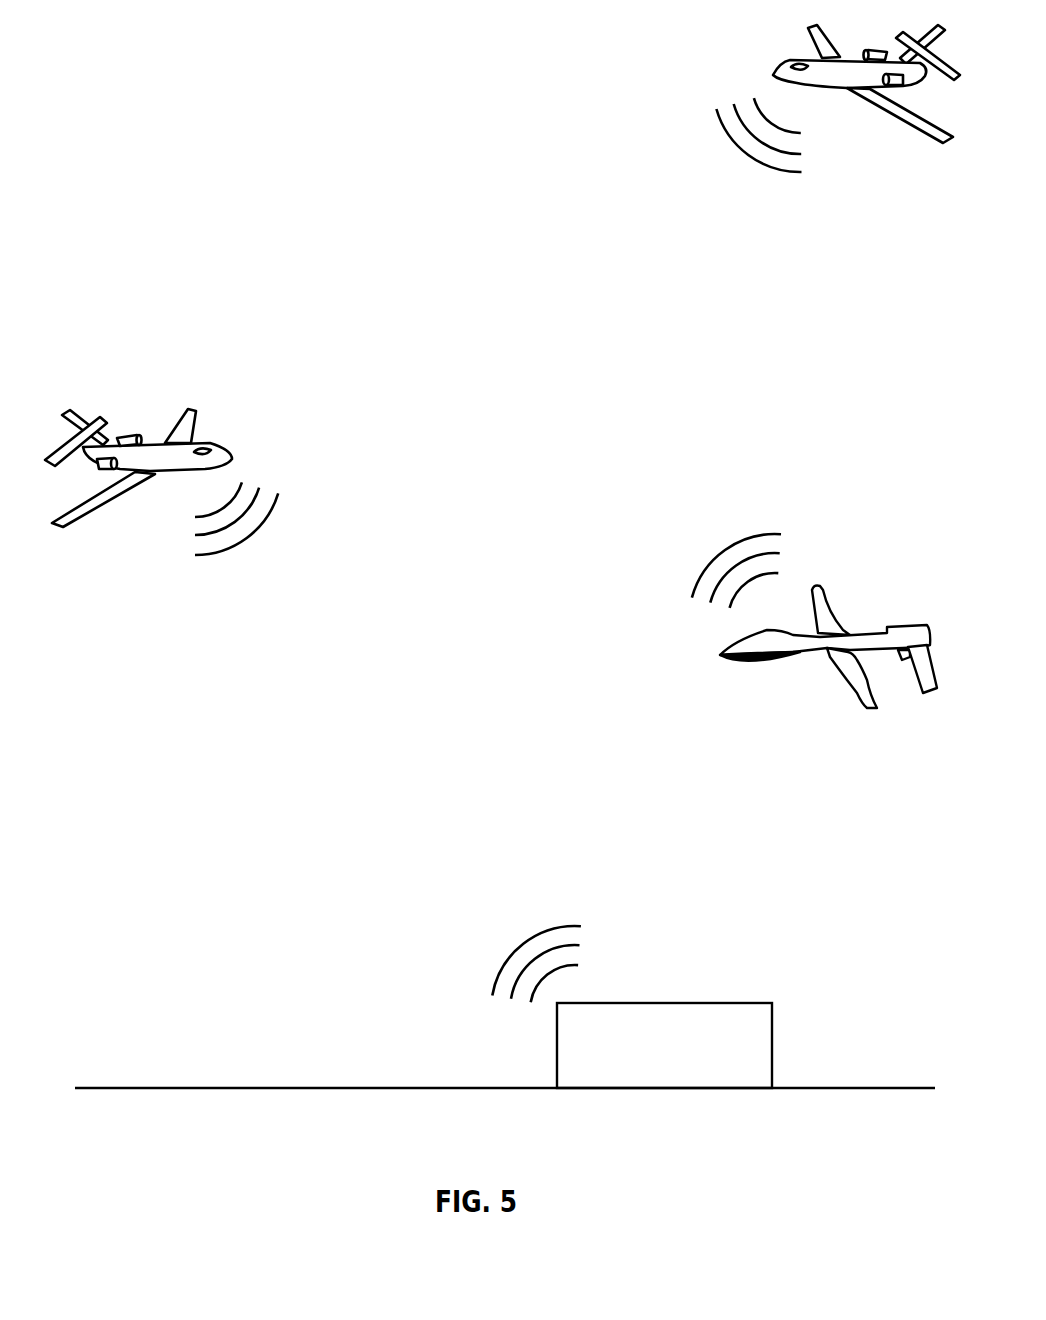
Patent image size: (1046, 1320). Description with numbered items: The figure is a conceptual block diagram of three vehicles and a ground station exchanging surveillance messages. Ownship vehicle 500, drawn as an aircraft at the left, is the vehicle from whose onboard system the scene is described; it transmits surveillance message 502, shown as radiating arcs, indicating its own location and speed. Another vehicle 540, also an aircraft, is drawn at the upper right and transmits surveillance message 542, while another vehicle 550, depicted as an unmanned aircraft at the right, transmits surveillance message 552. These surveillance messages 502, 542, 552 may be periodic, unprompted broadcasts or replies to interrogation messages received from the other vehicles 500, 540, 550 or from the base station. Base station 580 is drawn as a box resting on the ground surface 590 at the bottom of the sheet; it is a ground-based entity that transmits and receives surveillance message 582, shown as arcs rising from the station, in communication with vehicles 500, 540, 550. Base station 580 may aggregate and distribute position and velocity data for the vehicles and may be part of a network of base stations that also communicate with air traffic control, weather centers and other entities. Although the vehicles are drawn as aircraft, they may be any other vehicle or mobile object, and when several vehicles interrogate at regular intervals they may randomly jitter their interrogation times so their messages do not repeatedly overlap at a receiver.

The ownship vehicle 500 is at (236, 342).
The surveillance message 502 is at (237, 563).
The other vehicle 540 is at (869, 216).
The surveillance message 542 is at (731, 188).
The other vehicle 550 is at (803, 728).
The surveillance message 552 is at (700, 532).
The base station 580 is at (645, 1071).
The surveillance message 582 is at (500, 926).
The ground 590 is at (300, 1088).